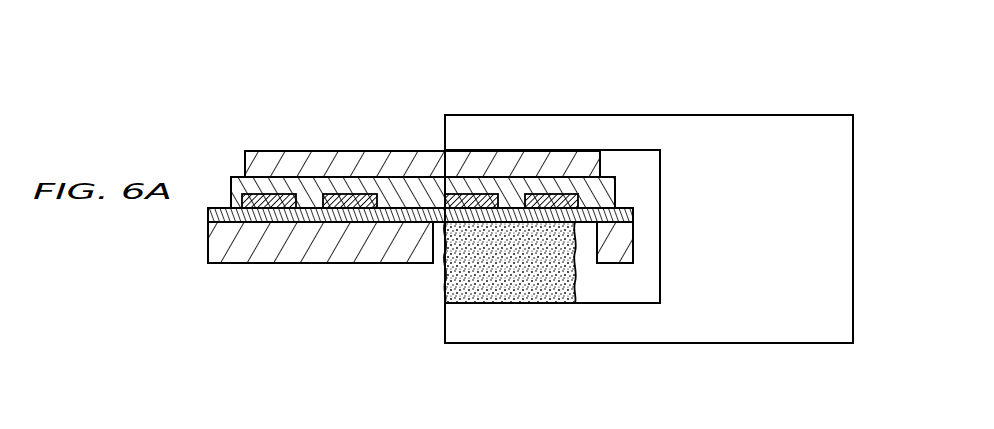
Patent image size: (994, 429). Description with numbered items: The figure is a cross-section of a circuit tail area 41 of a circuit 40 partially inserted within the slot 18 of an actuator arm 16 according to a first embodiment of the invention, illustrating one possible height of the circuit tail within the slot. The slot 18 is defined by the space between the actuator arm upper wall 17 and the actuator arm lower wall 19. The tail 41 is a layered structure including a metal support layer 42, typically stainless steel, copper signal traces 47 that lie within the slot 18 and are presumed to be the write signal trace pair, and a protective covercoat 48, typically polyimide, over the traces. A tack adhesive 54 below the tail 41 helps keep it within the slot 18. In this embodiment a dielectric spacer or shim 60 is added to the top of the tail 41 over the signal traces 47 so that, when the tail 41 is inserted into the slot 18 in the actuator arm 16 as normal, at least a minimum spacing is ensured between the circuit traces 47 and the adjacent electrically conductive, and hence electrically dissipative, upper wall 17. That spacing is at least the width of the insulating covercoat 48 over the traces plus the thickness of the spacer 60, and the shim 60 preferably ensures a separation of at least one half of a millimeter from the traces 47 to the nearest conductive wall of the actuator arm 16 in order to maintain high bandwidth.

The actuator arm 16 is at (860, 173).
The actuator arm upper wall 17 is at (473, 115).
The slot 18 is at (612, 273).
The actuator arm lower wall 19 is at (517, 343).
The circuit 40 is at (397, 172).
The tail 41 is at (233, 193).
The metal support layer 42 is at (290, 263).
The signal traces 47 is at (540, 195).
The covercoat 48 is at (233, 202).
The tack adhesive 54 is at (458, 290).
The dielectric spacer 60 is at (322, 151).